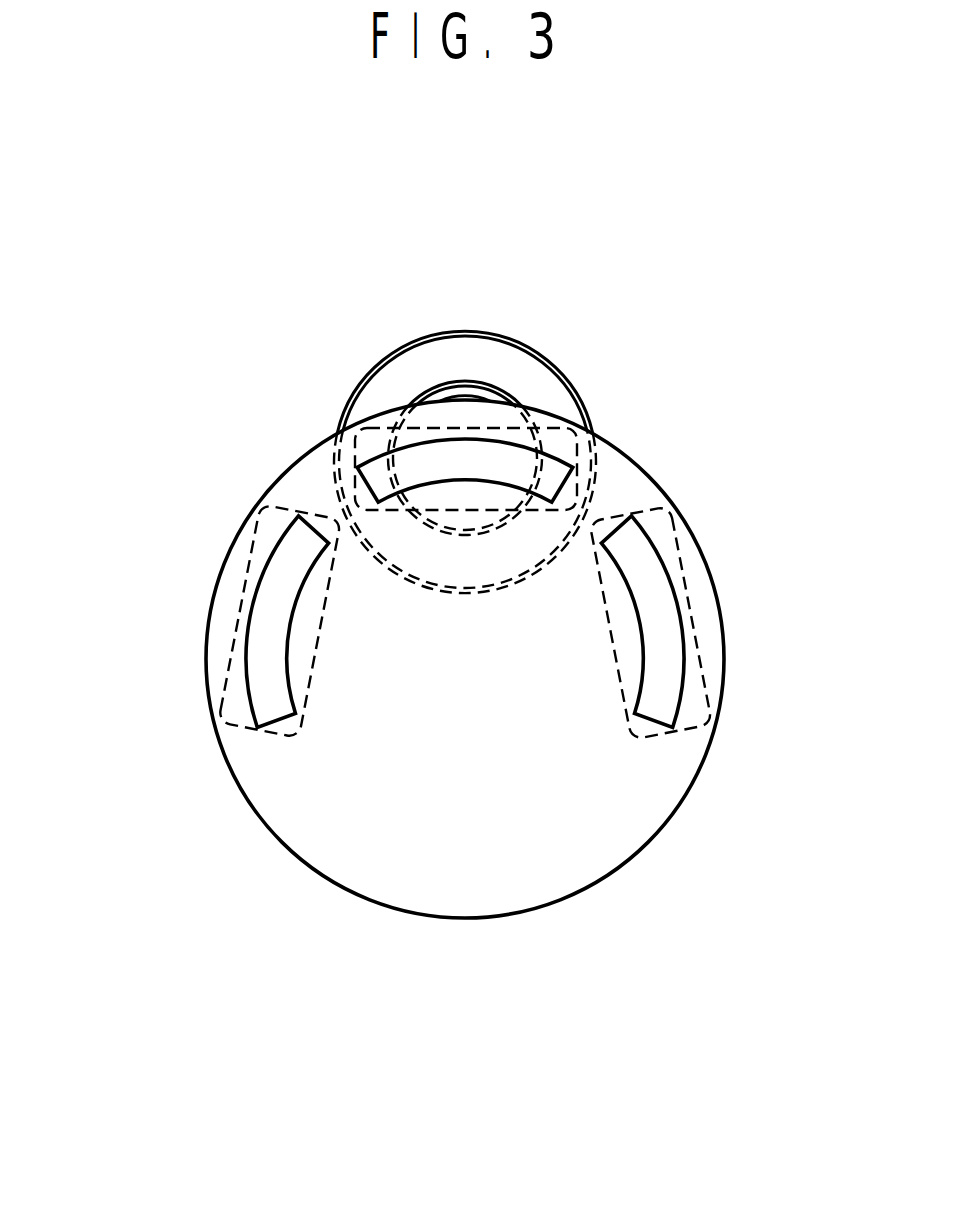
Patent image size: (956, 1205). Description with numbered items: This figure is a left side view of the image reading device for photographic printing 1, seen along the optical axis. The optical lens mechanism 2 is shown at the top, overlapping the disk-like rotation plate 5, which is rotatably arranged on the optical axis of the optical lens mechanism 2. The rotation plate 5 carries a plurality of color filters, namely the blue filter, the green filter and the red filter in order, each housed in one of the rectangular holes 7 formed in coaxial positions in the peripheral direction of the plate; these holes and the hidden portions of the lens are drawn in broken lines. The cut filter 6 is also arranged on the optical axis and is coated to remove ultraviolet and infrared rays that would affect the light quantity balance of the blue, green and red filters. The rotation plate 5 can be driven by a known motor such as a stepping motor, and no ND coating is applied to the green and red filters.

The image reading device for photographic printing 1 is at (338, 353).
The optical lens mechanism 2 is at (512, 362).
The filter rotation plate 5 is at (328, 845).
The cut filter 6 is at (652, 518).
The rectangular hole 7 is at (692, 603).